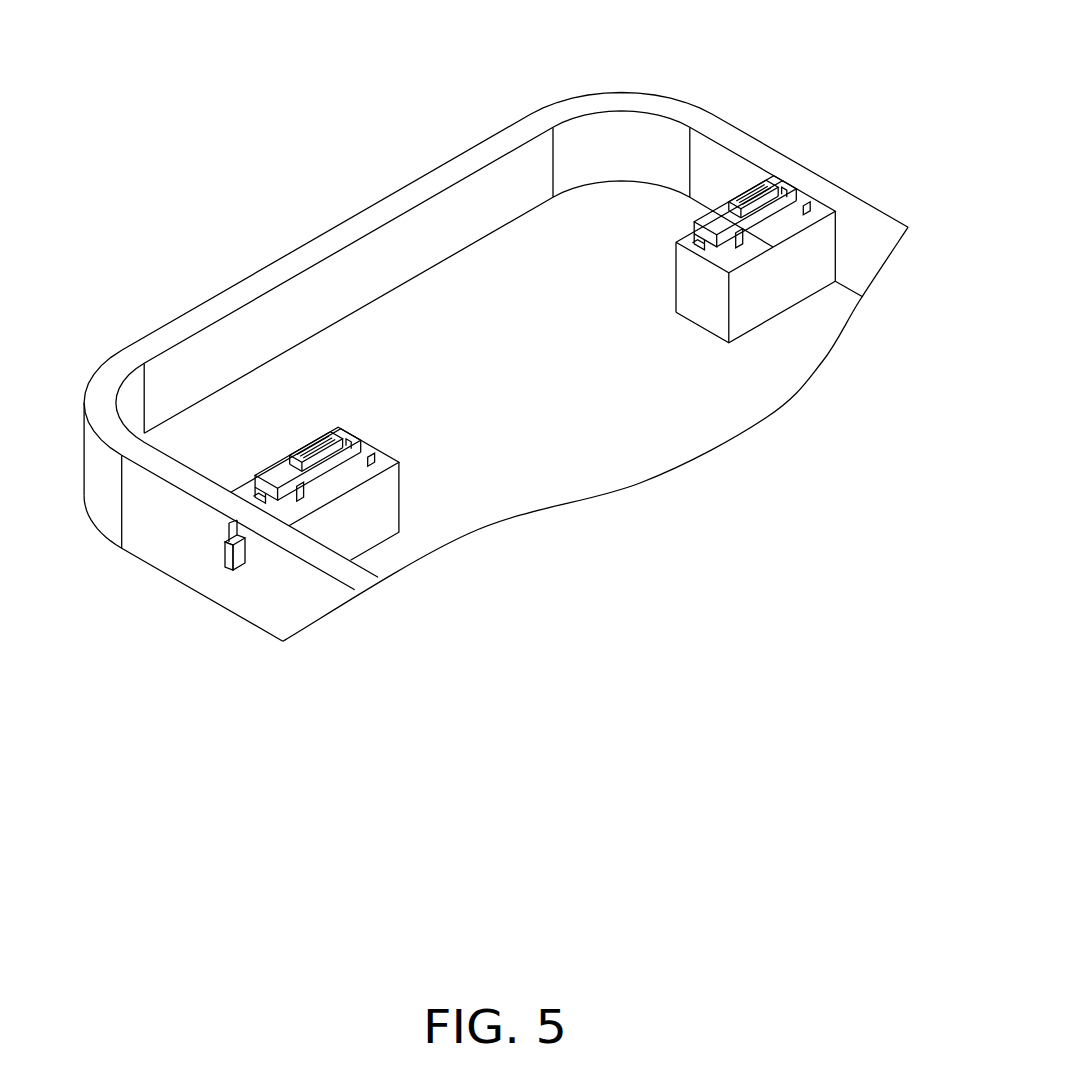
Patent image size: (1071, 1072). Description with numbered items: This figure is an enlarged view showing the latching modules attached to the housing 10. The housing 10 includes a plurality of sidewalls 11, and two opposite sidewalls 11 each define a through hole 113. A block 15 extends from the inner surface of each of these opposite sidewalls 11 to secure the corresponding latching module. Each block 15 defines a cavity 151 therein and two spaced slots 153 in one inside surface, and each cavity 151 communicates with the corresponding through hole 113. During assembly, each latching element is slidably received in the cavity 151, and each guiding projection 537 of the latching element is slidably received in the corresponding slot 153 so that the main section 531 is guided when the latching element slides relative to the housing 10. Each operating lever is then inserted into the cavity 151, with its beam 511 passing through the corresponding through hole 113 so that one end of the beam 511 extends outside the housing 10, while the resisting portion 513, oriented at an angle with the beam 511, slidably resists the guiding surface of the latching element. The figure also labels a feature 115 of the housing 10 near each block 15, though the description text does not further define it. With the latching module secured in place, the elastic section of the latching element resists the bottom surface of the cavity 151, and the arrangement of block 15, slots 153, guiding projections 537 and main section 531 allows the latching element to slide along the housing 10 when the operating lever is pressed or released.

The housing 10 is at (460, 168).
The sidewall 11 is at (107, 523).
The block 15 is at (388, 497).
The through hole 113 is at (247, 548).
The receiving slot 115 is at (287, 468).
The cavity 151 is at (362, 457).
The slot 153 is at (342, 481).
The beam 511 is at (236, 566).
The resisting portion 513 is at (250, 490).
The main section 531 is at (307, 497).
The guiding projection 537 is at (342, 481).